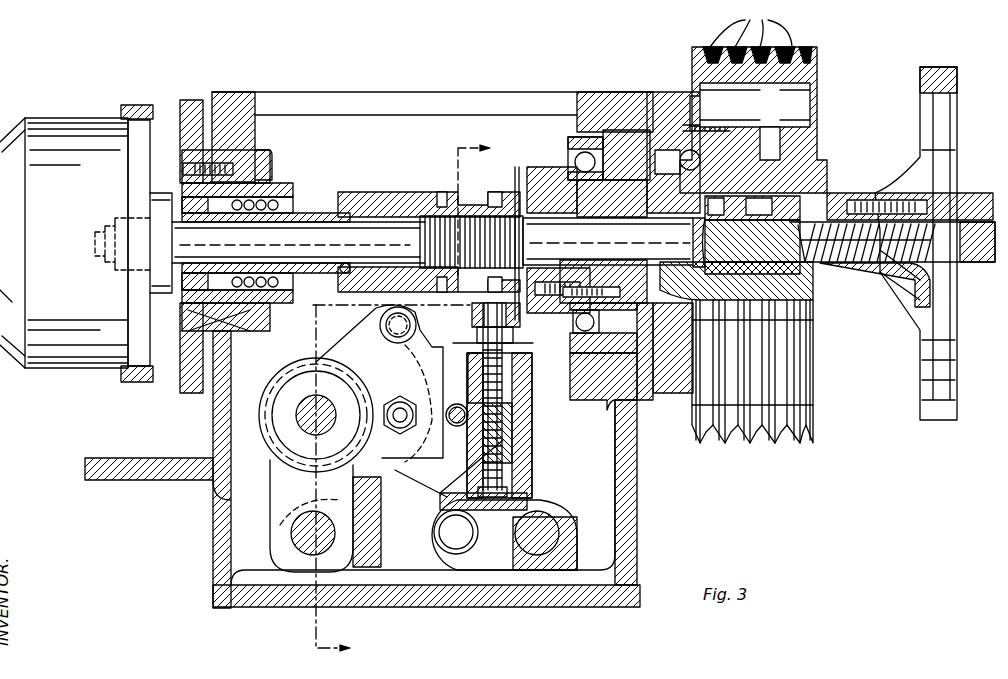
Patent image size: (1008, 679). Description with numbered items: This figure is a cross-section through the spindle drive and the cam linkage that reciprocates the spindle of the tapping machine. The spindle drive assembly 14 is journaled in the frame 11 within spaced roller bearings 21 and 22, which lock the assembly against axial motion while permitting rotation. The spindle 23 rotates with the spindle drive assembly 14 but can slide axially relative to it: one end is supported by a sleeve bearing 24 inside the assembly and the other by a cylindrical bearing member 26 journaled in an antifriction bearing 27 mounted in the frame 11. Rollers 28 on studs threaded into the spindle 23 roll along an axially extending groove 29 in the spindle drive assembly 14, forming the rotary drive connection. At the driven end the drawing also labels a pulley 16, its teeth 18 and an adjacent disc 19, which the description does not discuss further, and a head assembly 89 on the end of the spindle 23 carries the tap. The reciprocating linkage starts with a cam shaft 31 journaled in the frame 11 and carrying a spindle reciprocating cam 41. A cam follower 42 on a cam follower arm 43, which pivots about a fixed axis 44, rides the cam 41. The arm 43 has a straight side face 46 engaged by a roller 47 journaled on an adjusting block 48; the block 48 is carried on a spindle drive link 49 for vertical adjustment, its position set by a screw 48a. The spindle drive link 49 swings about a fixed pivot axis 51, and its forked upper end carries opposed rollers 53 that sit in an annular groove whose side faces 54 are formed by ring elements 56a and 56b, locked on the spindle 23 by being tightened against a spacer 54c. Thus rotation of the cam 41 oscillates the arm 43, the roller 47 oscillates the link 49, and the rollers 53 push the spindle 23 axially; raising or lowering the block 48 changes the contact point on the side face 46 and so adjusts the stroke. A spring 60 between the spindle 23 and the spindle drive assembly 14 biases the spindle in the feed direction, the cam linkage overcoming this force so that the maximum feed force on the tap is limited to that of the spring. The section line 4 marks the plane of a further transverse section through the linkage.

The head assembly 89 is at (88, 103).
The frame 11 is at (637, 517).
The antifriction bearing 27 is at (286, 188).
The cylindrical bearing member 26 is at (300, 214).
The spindle 23 is at (308, 228).
The side faces 54 is at (458, 200).
The ring element 56a is at (412, 194).
The ring element 56b is at (505, 192).
The section line 4 is at (391, 400).
The rollers 53 is at (532, 232).
The roller bearing 21 is at (566, 158).
The roller bearing 22 is at (712, 124).
The pulley 16 is at (815, 72).
The teeth 18 is at (751, 25).
The disc 19 is at (920, 132).
The spindle drive assembly 14 is at (970, 226).
The spring 60 is at (872, 266).
The sleeve bearing 24 is at (612, 223).
The axially extending groove 29 is at (680, 205).
The rollers 28 is at (683, 248).
The spacer 54c is at (472, 328).
The cam follower arm 43 is at (428, 358).
The fixed axis 44 is at (392, 333).
The spindle reciprocating cam 41 is at (266, 445).
The cam shaft 31 is at (328, 412).
The cam follower 42 is at (388, 438).
The straight side face 46 is at (466, 392).
The roller 47 is at (460, 406).
The spindle drive link 49 is at (527, 413).
The adjusting block 48 is at (460, 455).
The screw 48a is at (512, 465).
The fixed pivot axis 51 is at (455, 540).